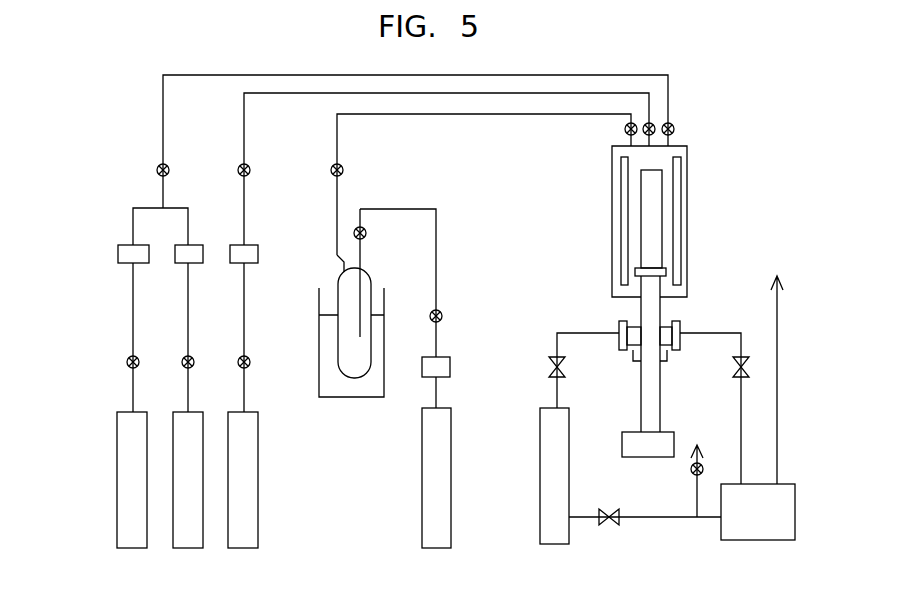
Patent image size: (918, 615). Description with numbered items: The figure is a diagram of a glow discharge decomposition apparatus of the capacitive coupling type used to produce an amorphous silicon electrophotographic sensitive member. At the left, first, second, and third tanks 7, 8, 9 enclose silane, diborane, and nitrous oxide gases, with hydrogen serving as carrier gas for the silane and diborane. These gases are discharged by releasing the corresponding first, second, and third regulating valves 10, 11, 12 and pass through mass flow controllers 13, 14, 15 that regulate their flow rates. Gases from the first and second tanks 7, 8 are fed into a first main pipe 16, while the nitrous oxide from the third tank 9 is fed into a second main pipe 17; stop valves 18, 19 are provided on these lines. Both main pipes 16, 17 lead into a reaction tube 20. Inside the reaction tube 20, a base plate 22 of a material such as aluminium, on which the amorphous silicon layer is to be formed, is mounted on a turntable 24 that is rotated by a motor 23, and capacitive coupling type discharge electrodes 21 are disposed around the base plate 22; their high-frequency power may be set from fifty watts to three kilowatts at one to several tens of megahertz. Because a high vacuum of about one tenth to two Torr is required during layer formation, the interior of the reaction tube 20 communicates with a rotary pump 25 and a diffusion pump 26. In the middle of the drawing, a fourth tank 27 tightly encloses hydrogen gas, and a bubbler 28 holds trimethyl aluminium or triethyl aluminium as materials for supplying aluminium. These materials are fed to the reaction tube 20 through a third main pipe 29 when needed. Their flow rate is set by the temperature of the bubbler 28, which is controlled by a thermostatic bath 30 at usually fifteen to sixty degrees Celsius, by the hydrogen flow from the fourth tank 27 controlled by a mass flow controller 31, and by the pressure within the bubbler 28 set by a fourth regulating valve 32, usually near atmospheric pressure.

The first tank 7 is at (133, 539).
The second tank 8 is at (190, 539).
The third tank 9 is at (243, 538).
The first regulating valve 10 is at (128, 359).
The second regulating valve 11 is at (185, 357).
The third regulating valve 12 is at (243, 357).
The mass flow controller 13 is at (126, 245).
The mass flow controller 14 is at (190, 245).
The mass flow controller 15 is at (245, 245).
The first main pipe 16 is at (163, 118).
The second main pipe 17 is at (244, 118).
The stop valve 18 is at (161, 163).
The stop valve 19 is at (240, 163).
The reaction tube 20 is at (662, 155).
The capacitive coupling type discharge electrodes 21 is at (624, 171).
The base plate 22 is at (655, 228).
The motor 23 is at (650, 450).
The turntable 24 is at (653, 268).
The rotary pump 25 is at (763, 528).
The diffusion pump 26 is at (556, 533).
The fourth tank 27 is at (442, 539).
The bubbler 28 is at (355, 368).
The third main pipe 29 is at (472, 114).
The thermostatic bath 30 is at (323, 359).
The mass flow controller 31 is at (449, 365).
The fourth regulating valve 32 is at (441, 316).